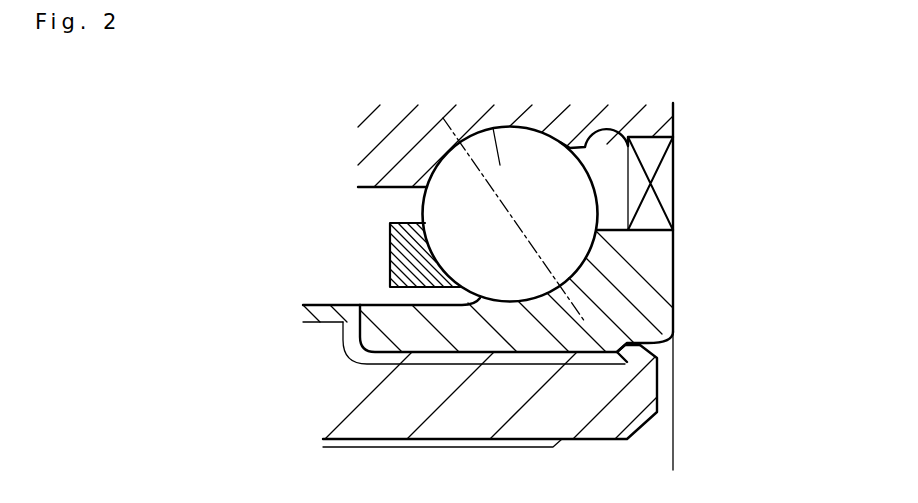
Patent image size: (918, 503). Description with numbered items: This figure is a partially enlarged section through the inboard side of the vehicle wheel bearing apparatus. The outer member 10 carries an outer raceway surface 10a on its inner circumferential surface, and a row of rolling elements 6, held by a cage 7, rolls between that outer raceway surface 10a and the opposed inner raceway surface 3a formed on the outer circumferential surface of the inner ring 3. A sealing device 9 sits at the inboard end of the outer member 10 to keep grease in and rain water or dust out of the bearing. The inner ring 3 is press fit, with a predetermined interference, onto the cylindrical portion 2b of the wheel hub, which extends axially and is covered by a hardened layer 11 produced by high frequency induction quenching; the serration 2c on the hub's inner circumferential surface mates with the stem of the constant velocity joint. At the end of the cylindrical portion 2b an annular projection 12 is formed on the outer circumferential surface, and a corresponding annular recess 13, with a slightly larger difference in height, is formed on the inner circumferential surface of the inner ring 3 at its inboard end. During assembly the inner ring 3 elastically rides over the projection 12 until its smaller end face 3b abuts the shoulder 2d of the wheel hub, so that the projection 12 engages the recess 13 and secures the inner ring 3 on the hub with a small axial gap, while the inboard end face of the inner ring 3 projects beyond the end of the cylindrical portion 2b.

The cylindrical portion 2b is at (562, 352).
The serration 2c is at (552, 447).
The shoulder 2d is at (338, 307).
The inner ring 3 is at (620, 268).
The inner raceway surface 3a is at (560, 203).
The smaller end face 3b is at (343, 328).
The rolling elements 6 is at (457, 212).
The cage 7 is at (417, 258).
The sealing device 9 is at (674, 142).
The outer member 10 is at (575, 120).
The outer raceway surface 10a is at (500, 165).
The hardened layer 11 is at (466, 360).
The annular projection 12 is at (627, 343).
The annular recess 13 is at (677, 380).